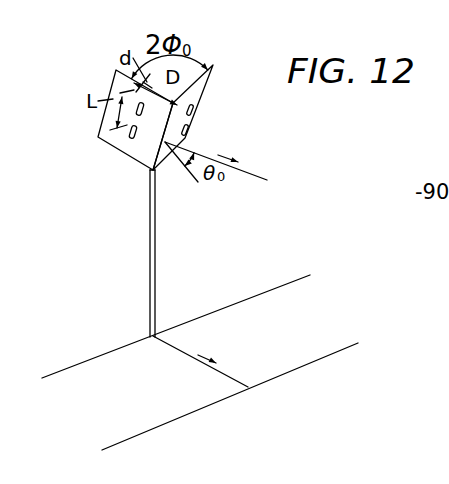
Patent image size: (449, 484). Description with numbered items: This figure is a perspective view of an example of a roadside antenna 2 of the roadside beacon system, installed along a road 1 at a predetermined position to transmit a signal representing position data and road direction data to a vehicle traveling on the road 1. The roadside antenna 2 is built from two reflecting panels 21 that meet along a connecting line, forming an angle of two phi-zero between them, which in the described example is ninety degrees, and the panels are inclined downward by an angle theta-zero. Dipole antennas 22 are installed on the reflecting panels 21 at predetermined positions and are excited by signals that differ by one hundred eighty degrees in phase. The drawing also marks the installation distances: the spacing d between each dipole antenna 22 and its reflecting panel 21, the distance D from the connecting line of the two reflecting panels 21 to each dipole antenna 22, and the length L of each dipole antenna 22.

The road 1 is at (191, 405).
The roadside antenna 2 is at (166, 124).
The reflecting panel 21 is at (99, 128).
The dipole antenna 22 is at (192, 112).